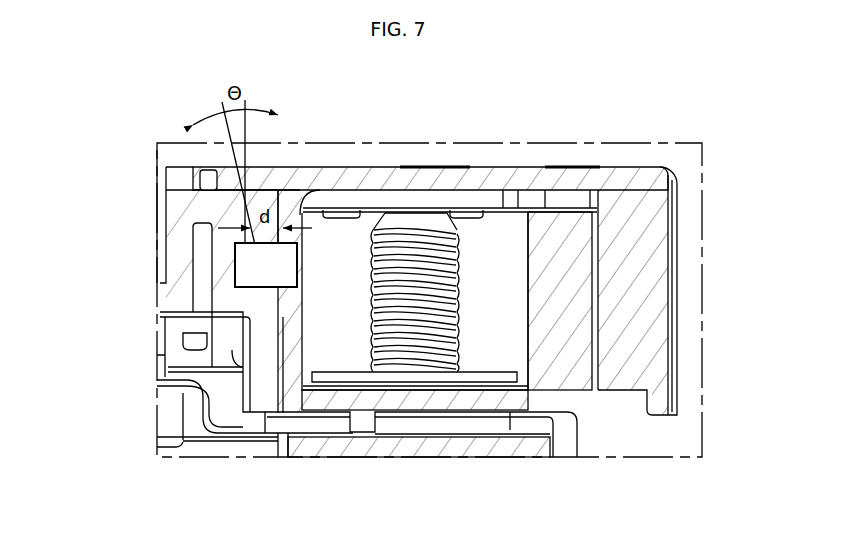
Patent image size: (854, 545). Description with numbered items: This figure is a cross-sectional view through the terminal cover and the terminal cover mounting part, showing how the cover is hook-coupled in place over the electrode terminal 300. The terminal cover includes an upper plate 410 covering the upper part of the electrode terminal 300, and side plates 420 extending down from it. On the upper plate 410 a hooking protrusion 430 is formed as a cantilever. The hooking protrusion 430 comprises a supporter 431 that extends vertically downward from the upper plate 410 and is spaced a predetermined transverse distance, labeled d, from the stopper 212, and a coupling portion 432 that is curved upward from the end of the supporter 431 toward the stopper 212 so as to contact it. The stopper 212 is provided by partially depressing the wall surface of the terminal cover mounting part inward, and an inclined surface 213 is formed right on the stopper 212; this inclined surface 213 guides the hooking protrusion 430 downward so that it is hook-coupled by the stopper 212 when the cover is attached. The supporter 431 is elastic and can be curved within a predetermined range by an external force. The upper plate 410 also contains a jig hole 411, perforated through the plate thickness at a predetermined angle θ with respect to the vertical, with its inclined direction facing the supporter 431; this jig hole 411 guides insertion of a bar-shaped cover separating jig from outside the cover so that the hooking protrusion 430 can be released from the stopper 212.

The upper plate 410 is at (465, 177).
The jig hole 411 is at (203, 181).
The side plate 420 is at (657, 270).
The electrode terminal 300 is at (447, 285).
The inclined surface 213 is at (243, 212).
The stopper 212 is at (248, 242).
The hooking protrusion 430 is at (168, 335).
The supporter 431 is at (290, 240).
The coupling portion 432 is at (258, 262).